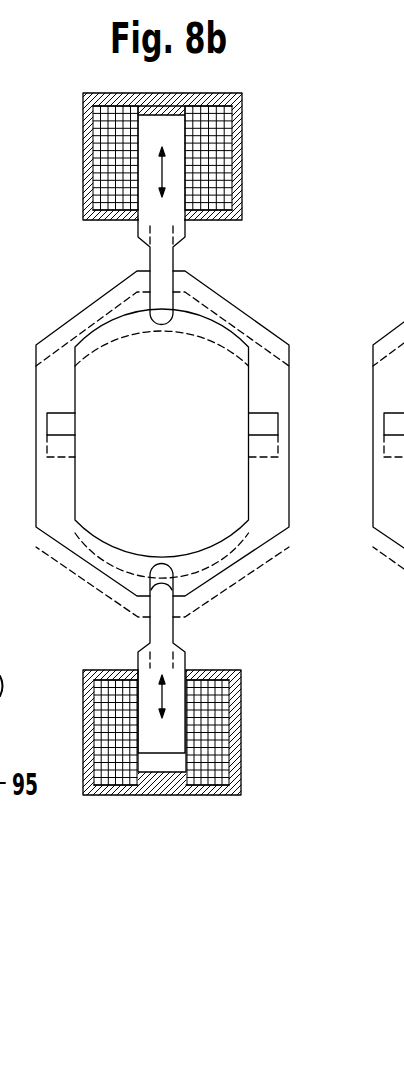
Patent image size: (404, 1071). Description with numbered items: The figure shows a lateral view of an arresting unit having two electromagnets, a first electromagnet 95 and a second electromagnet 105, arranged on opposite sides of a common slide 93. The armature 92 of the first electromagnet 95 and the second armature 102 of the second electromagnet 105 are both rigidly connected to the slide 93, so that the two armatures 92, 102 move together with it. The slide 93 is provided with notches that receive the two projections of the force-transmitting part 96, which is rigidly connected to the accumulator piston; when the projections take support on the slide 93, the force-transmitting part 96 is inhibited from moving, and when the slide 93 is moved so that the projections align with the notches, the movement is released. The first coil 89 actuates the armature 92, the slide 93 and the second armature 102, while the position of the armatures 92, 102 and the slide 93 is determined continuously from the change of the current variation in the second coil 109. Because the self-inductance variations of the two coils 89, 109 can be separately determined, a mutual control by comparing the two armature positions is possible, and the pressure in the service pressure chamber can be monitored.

The second electromagnet 105 is at (255, 138).
The second coil 109 is at (217, 197).
The second armature 102 is at (162, 258).
The slide 93 is at (275, 373).
The force-transmitting part 96 is at (220, 522).
The armature 92 is at (163, 625).
The first coil 89 is at (217, 688).
The electromagnet 95 is at (253, 748).